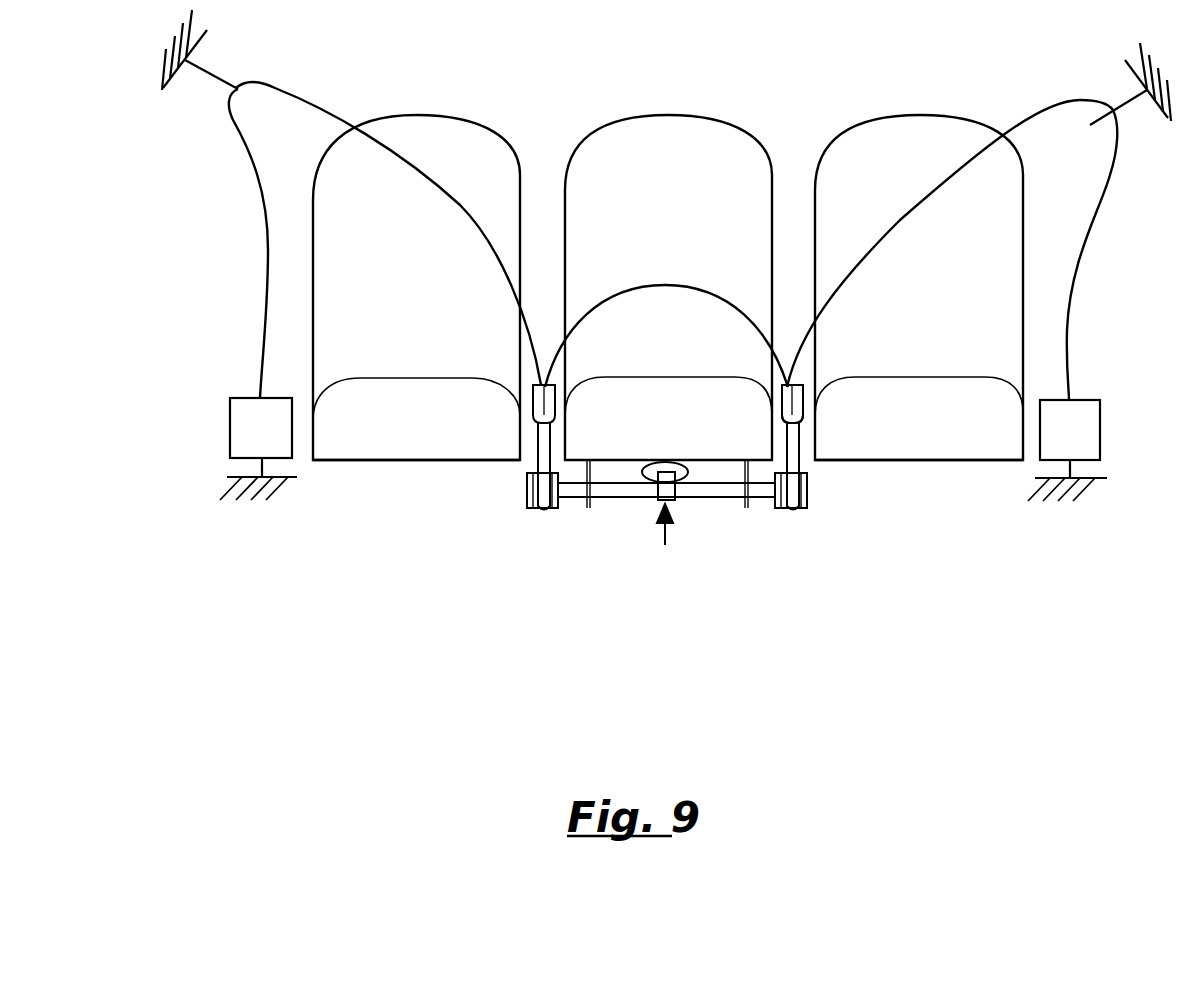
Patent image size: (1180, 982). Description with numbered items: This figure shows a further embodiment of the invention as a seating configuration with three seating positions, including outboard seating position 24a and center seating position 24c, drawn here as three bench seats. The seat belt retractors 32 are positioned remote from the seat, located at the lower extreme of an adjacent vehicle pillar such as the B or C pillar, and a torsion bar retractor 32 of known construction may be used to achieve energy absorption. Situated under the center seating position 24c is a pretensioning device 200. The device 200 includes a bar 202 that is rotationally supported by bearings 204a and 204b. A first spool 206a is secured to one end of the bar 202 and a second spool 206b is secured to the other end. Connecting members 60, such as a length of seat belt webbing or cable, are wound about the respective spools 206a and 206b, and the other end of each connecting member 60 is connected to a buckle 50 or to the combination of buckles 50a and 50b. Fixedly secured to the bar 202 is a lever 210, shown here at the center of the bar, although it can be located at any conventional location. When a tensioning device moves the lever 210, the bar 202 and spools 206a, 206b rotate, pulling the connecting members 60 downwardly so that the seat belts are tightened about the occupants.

The seating position 24a is at (427, 130).
The seating position 24c is at (673, 137).
The seat belt retractor 32 is at (255, 435).
The buckle 50 is at (533, 397).
The buckle 50a is at (778, 418).
The buckle 50b is at (808, 414).
The connecting member 60 is at (520, 455).
The pretensioning device 200 is at (667, 540).
The bar 202 is at (618, 495).
The bearing 204a is at (587, 510).
The bearing 204b is at (745, 510).
The first spool 206a is at (545, 508).
The second spool 206b is at (803, 513).
The lever 210 is at (665, 470).